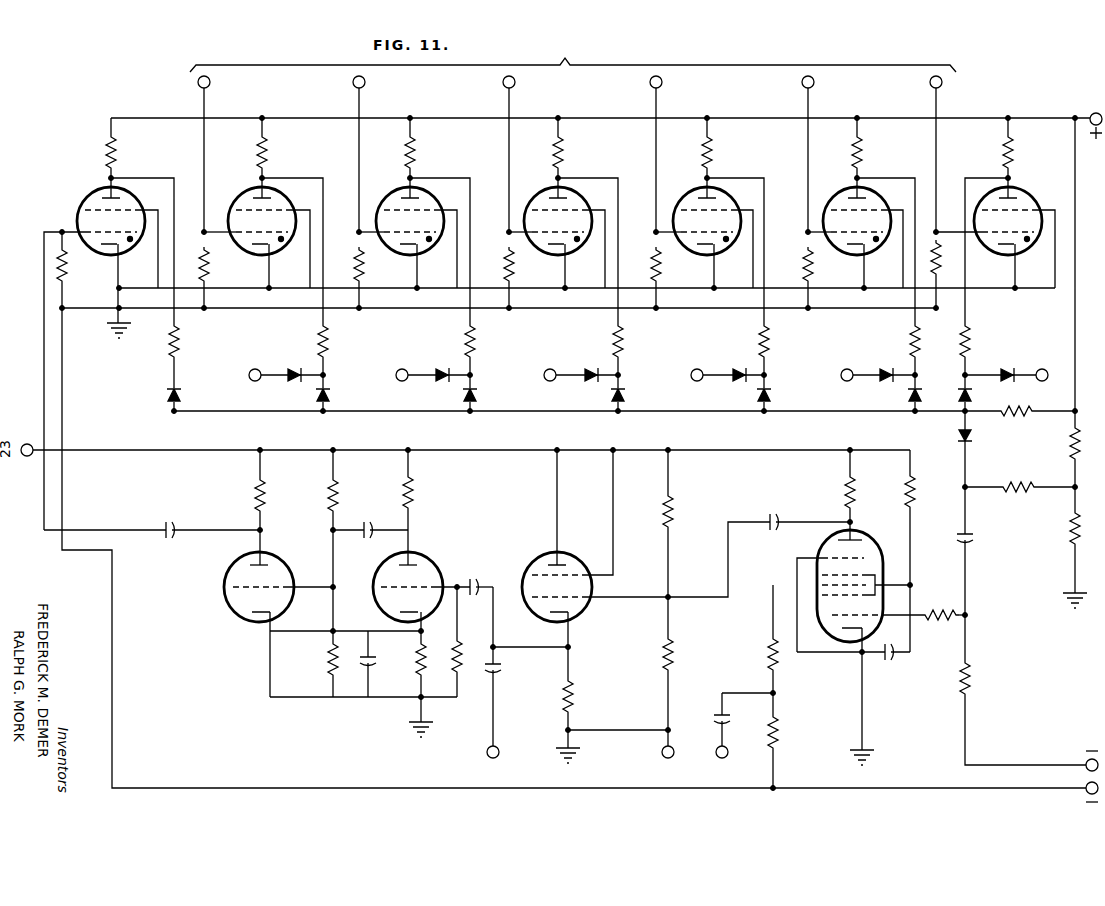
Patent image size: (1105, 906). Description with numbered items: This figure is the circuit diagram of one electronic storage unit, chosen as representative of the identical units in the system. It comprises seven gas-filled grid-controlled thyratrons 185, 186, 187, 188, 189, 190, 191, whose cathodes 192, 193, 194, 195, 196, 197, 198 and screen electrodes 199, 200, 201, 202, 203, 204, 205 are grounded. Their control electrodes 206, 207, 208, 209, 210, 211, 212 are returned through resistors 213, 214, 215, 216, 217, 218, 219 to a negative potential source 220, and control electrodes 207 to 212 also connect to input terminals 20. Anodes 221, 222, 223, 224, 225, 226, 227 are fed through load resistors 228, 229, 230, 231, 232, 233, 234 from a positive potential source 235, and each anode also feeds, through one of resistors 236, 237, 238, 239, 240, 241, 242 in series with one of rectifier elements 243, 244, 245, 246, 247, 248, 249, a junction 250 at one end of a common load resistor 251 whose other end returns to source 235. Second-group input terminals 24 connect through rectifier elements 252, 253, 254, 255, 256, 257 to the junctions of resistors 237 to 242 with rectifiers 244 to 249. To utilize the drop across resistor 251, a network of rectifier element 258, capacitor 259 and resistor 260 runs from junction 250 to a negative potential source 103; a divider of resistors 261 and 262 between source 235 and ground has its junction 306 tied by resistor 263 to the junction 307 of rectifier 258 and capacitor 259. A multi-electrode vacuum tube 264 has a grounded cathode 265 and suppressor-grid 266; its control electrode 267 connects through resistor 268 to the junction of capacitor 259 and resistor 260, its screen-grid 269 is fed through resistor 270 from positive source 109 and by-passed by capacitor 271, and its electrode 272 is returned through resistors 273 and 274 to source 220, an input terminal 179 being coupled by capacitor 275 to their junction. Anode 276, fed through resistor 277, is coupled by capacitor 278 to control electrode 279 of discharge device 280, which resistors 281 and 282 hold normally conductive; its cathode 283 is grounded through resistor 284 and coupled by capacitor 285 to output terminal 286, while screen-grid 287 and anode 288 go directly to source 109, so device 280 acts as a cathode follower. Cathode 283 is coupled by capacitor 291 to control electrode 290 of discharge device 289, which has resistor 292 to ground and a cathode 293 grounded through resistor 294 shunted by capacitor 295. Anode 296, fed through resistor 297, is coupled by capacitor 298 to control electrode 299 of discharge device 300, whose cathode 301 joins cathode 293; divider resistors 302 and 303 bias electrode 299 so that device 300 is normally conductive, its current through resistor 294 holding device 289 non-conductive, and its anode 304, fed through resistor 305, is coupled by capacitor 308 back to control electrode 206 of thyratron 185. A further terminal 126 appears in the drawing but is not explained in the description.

The input terminals 20 is at (573, 55).
The second-group input terminals 24 is at (1042, 369).
The negative potential source 103 is at (1086, 760).
The positive potential source 109 is at (27, 443).
The terminal 126 is at (663, 758).
The input terminal 179 is at (714, 761).
The thyratron 185 is at (84, 212).
The thyratron 186 is at (240, 207).
The thyratron 187 is at (385, 207).
The thyratron 188 is at (534, 207).
The thyratron 189 is at (686, 207).
The thyratron 190 is at (836, 207).
The thyratron 191 is at (1030, 200).
The cathode 192 is at (113, 250).
The cathode 193 is at (266, 248).
The cathode 194 is at (414, 248).
The cathode 195 is at (562, 248).
The cathode 196 is at (712, 248).
The cathode 197 is at (862, 248).
The cathode 198 is at (1010, 250).
The screen electrode 199 is at (88, 202).
The screen electrode 200 is at (275, 207).
The screen electrode 201 is at (425, 207).
The screen electrode 202 is at (588, 210).
The screen electrode 203 is at (716, 207).
The screen electrode 204 is at (866, 207).
The screen electrode 205 is at (997, 208).
The control electrode 206 is at (95, 232).
The control electrode 207 is at (256, 242).
The control electrode 208 is at (407, 242).
The control electrode 209 is at (556, 242).
The control electrode 210 is at (705, 242).
The control electrode 211 is at (855, 242).
The control electrode 212 is at (995, 242).
The resistor 213 is at (68, 280).
The resistor 214 is at (208, 268).
The resistor 215 is at (362, 268).
The resistor 216 is at (512, 285).
The resistor 217 is at (662, 268).
The resistor 218 is at (812, 268).
The resistor 219 is at (940, 283).
The negative potential source 220 is at (1086, 793).
The anode 221 is at (120, 193).
The anode 222 is at (256, 195).
The anode 223 is at (403, 195).
The anode 224 is at (565, 200).
The anode 225 is at (705, 195).
The anode 226 is at (851, 195).
The anode 227 is at (1015, 195).
The load resistor 228 is at (118, 156).
The load resistor 229 is at (268, 156).
The load resistor 230 is at (416, 156).
The load resistor 231 is at (565, 156).
The load resistor 232 is at (712, 156).
The load resistor 233 is at (862, 156).
The load resistor 234 is at (1013, 156).
The positive potential source 235 is at (1088, 114).
The resistor 236 is at (180, 350).
The resistor 237 is at (328, 350).
The resistor 238 is at (475, 350).
The resistor 239 is at (622, 350).
The resistor 240 is at (770, 350).
The resistor 241 is at (910, 345).
The resistor 242 is at (970, 350).
The rectifier element 243 is at (168, 398).
The rectifier element 244 is at (330, 400).
The rectifier element 245 is at (478, 398).
The rectifier element 246 is at (625, 398).
The rectifier element 247 is at (771, 398).
The rectifier element 248 is at (918, 392).
The rectifier element 249 is at (972, 398).
The junction 250 is at (960, 418).
The common load impedance 251 is at (1016, 420).
The rectifier element 252 is at (292, 380).
The rectifier element 253 is at (440, 380).
The rectifier element 254 is at (587, 380).
The rectifier element 255 is at (735, 380).
The rectifier element 256 is at (884, 380).
The rectifier element 257 is at (1008, 368).
The rectifier element 258 is at (960, 440).
The capacitor 259 is at (975, 535).
The resistor 260 is at (972, 685).
The resistor 261 is at (1068, 445).
The resistor 262 is at (1068, 530).
The resistor 263 is at (1021, 483).
The multi-electrode vacuum tube 264 is at (821, 550).
The cathode 265 is at (852, 634).
The suppressor-grid 266 is at (856, 556).
The control electrode 267 is at (872, 615).
The resistor 268 is at (945, 600).
The screen-grid 269 is at (863, 573).
The resistor 270 is at (914, 485).
The capacitor 271 is at (889, 661).
The electrode 272 is at (830, 585).
The resistor 273 is at (768, 650).
The resistor 274 is at (782, 732).
The capacitor 275 is at (716, 720).
The anode 276 is at (853, 532).
The resistor 277 is at (845, 490).
The capacitor 278 is at (773, 515).
The control electrode 279 is at (580, 605).
The electron discharge device 280 is at (541, 562).
The resistor 281 is at (675, 515).
The resistor 282 is at (662, 655).
The cathode 283 is at (548, 620).
The resistor 284 is at (573, 696).
The capacitor 285 is at (500, 672).
The output terminal 286 is at (500, 757).
The screen-grid 287 is at (562, 573).
The anode 288 is at (568, 563).
The electron discharge device 289 is at (418, 560).
The control electrode 290 is at (428, 585).
The capacitor 291 is at (473, 582).
The resistor 292 is at (463, 672).
The cathode 293 is at (394, 612).
The resistor 294 is at (416, 655).
The capacitor 295 is at (365, 680).
The anode 296 is at (380, 565).
The resistor 297 is at (418, 492).
The capacitor 298 is at (367, 523).
The control electrode 299 is at (285, 585).
The electron discharge device 300 is at (224, 596).
The cathode 301 is at (257, 622).
The resistor 302 is at (328, 487).
The resistor 303 is at (329, 660).
The anode 304 is at (268, 563).
The resistor 305 is at (252, 487).
The junction 306 is at (1072, 492).
The junction 307 is at (962, 490).
The capacitor 308 is at (166, 520).